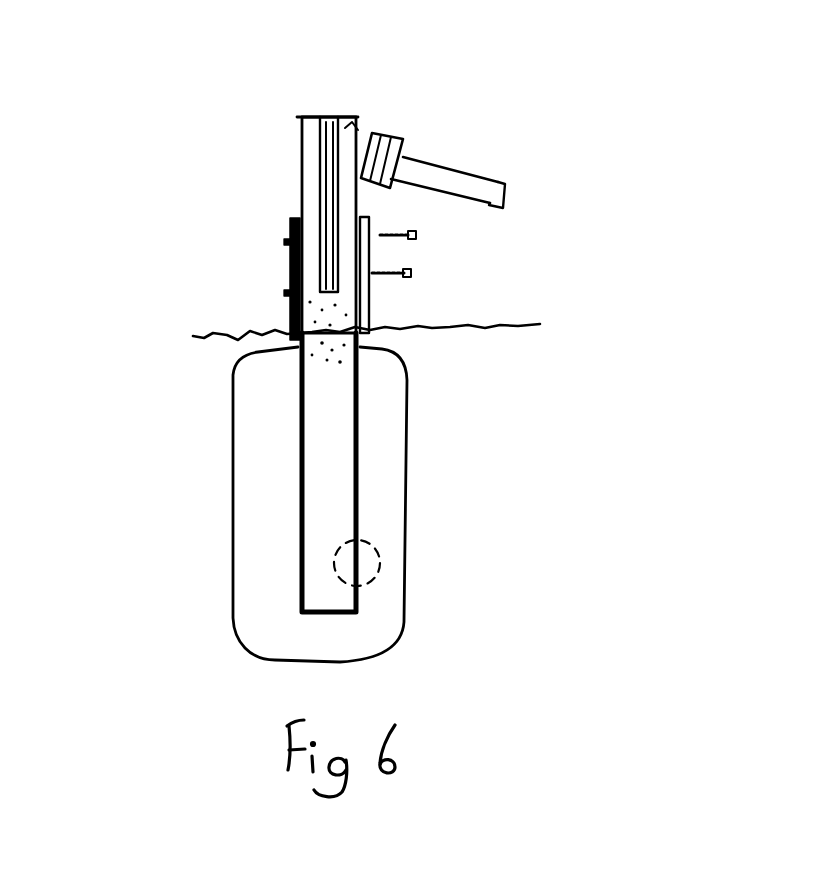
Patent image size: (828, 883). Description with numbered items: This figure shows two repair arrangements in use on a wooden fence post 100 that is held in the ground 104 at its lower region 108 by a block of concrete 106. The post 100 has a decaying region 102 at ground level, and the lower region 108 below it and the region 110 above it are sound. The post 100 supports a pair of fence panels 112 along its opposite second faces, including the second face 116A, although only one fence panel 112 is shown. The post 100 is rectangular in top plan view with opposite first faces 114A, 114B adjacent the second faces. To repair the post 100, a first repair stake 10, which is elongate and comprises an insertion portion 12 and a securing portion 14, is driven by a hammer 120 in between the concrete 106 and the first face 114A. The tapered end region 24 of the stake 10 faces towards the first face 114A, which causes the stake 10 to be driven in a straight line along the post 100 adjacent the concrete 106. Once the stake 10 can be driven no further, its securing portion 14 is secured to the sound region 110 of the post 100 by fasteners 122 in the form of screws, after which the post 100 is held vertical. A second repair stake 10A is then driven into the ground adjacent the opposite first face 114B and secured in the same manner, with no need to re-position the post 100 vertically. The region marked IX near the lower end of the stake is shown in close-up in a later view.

The stake 10 is at (290, 270).
The second repair stake 10A is at (362, 428).
The insertion portion 12 is at (350, 473).
The securing portion 14 is at (368, 290).
The tapered end region 24 is at (345, 590).
The post 100 is at (330, 583).
The decaying region 102 is at (317, 362).
The ground 104 is at (500, 323).
The block of concrete 106 is at (390, 503).
The lower region 108 is at (315, 515).
The region above the decaying region 110 is at (303, 193).
The fence panel 112 is at (347, 130).
The first face 114A is at (300, 153).
The first face 114B is at (357, 196).
The second face 116A is at (313, 133).
The hammer 120 is at (502, 198).
The fastener 122 is at (287, 242).
The region marked IX is at (380, 543).